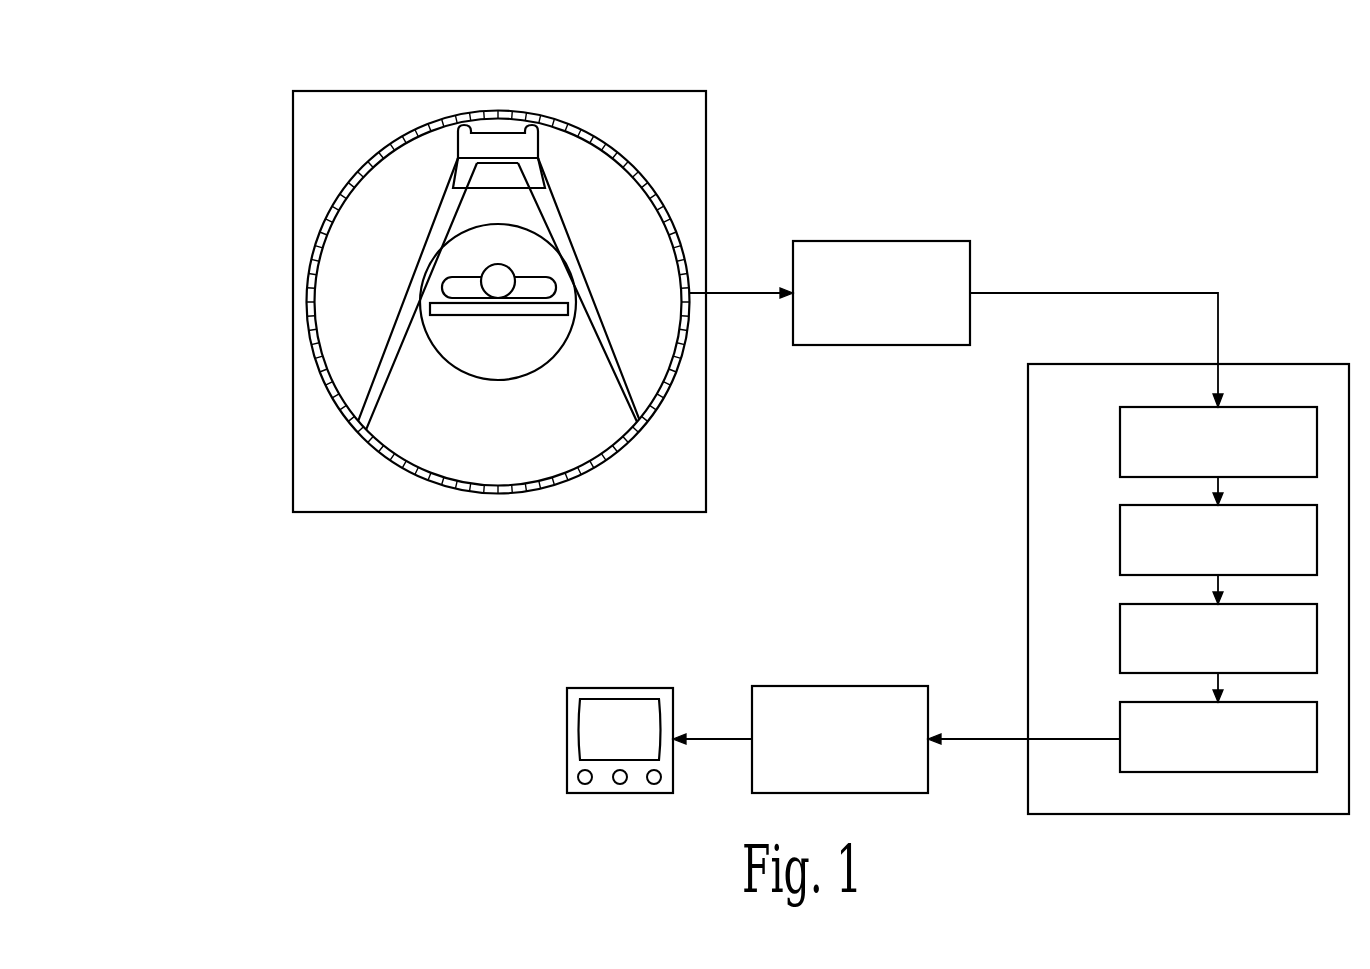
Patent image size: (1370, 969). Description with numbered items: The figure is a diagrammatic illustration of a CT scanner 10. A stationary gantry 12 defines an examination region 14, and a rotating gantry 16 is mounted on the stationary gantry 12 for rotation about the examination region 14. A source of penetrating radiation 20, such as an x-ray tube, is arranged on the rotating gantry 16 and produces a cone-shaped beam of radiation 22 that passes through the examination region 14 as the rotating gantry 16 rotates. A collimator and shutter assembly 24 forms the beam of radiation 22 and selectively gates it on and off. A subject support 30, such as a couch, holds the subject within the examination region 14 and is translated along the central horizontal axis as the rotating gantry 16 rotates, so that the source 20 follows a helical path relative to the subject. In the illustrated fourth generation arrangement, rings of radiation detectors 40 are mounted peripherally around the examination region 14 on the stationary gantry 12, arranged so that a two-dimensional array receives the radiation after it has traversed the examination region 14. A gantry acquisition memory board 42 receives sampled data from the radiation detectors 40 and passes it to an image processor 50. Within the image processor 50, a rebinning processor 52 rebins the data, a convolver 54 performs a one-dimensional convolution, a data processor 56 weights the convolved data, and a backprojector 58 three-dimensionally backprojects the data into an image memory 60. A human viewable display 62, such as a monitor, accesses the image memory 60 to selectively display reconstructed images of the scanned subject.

The CT scanner 10 is at (393, 578).
The stationary gantry 12 is at (633, 513).
The examination region 14 is at (511, 356).
The rotating gantry 16 is at (425, 240).
The source of penetrating radiation 20 is at (498, 131).
The beam of radiation 22 is at (541, 205).
The collimator and shutter assembly 24 is at (452, 176).
The subject support 30 is at (450, 320).
The radiation detectors 40 is at (629, 163).
The gantry acquisition memory board 42 is at (932, 241).
The image processor 50 is at (1150, 589).
The rebinning processor 52 is at (1120, 443).
The convolver 54 is at (1120, 541).
The data processor 56 is at (1120, 640).
The backprojector 58 is at (1120, 723).
The image memory 60 is at (838, 686).
The human viewable display 62 is at (567, 742).